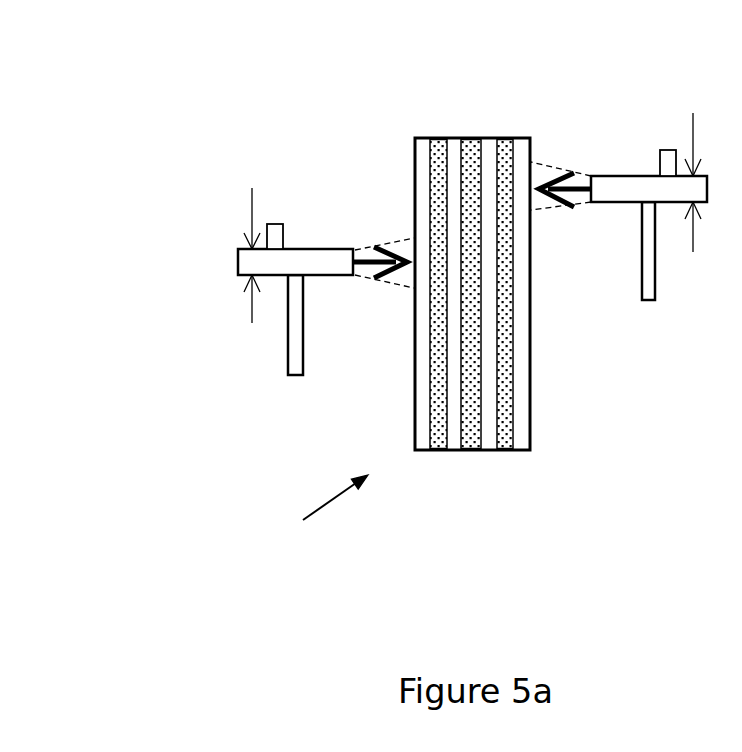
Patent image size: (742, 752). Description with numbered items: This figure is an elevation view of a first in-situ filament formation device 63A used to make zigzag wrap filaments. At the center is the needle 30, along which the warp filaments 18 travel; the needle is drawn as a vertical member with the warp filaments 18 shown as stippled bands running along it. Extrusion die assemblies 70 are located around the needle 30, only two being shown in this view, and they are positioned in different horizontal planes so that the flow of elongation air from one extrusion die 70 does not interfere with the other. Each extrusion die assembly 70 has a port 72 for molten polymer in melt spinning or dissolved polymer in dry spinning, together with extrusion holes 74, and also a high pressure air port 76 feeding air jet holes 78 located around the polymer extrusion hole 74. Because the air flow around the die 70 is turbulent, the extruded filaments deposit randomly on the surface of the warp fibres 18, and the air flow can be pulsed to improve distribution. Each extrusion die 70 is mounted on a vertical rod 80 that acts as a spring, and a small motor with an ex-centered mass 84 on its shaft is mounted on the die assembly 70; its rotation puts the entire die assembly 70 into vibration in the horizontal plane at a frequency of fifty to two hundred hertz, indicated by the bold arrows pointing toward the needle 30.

The warp filaments 18 is at (448, 162).
The needle 30 is at (528, 423).
The first in-situ filament formation device 63A is at (312, 519).
The extrusion die assembly 70 is at (315, 263).
The port 72 is at (248, 223).
The extrusion holes 74 is at (590, 200).
The high pressure air port 76 is at (248, 303).
The air jet holes 78 is at (355, 250).
The vertical rod 80 is at (297, 353).
The motor with ex-centered mass 84 is at (275, 224).